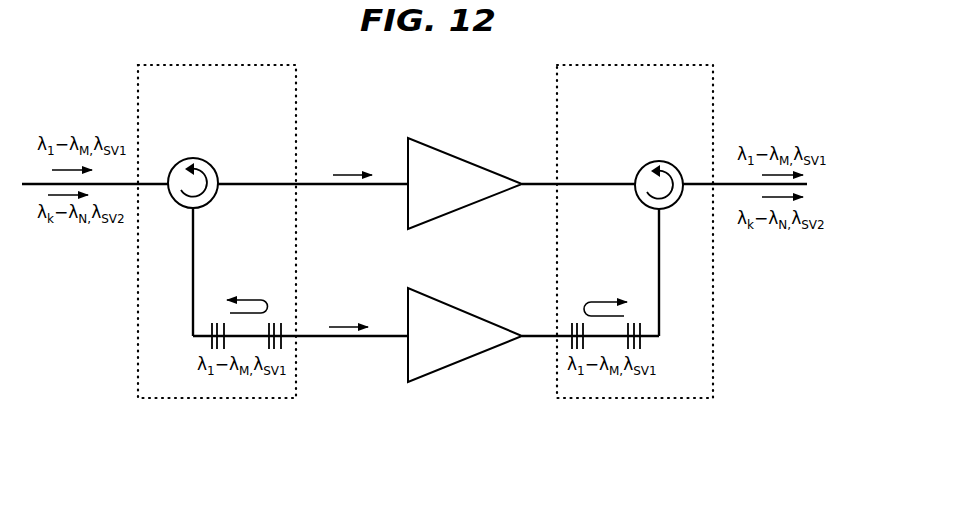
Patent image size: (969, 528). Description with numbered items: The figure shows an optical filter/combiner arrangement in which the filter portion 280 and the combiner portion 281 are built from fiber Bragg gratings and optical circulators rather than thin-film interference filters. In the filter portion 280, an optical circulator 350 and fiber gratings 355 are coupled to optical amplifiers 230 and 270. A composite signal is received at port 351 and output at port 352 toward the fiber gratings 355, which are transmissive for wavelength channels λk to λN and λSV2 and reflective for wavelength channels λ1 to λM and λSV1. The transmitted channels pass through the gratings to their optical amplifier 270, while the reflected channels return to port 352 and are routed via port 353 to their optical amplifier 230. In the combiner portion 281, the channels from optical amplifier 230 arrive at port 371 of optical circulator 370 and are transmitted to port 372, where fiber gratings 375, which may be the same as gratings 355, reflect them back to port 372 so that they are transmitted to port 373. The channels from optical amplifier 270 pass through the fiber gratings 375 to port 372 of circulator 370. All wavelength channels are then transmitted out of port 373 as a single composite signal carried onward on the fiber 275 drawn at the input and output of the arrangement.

The filter portion 280 is at (197, 66).
The combiner portion 281 is at (607, 66).
The optical circulator 350 is at (196, 159).
The port 351 is at (170, 194).
The port 352 is at (200, 208).
The port 353 is at (221, 168).
The fiber gratings 355 is at (217, 322).
The optical amplifier 230 is at (462, 157).
The optical amplifier 270 is at (455, 305).
The optical circulator 370 is at (661, 161).
The port 371 is at (637, 168).
The port 372 is at (650, 208).
The port 373 is at (683, 197).
The fiber gratings 375 is at (575, 322).
The transmission optical fiber 275 is at (27, 186).